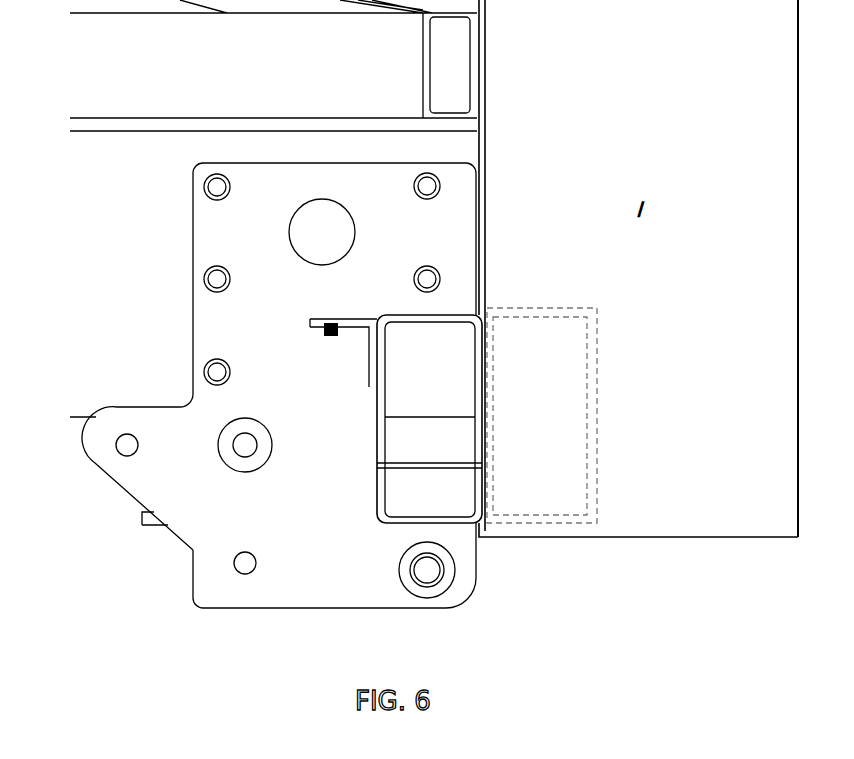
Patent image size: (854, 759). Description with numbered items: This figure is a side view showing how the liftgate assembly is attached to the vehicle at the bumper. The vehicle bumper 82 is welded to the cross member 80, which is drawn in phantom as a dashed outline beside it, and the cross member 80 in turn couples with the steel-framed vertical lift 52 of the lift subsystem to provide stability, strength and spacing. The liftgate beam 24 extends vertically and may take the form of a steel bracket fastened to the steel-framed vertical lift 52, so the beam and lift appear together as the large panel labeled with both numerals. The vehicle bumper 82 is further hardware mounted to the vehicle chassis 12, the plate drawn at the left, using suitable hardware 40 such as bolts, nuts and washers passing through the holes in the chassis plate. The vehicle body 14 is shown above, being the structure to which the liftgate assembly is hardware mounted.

The vehicle body 14 is at (318, 59).
The liftgate beam 24 is at (637, 219).
The steel-framed vertical lift 52 is at (668, 219).
The vehicle chassis 12 is at (150, 292).
The hardware 40 is at (198, 349).
The vehicle bumper 82 is at (377, 418).
The cross member 80 is at (597, 412).